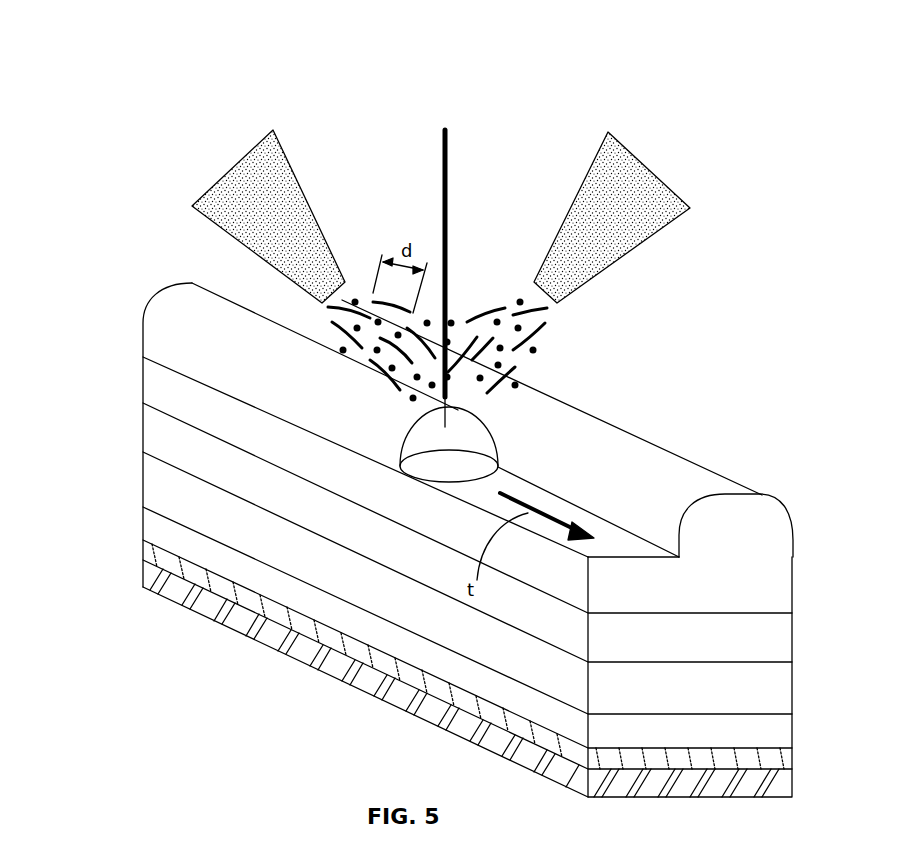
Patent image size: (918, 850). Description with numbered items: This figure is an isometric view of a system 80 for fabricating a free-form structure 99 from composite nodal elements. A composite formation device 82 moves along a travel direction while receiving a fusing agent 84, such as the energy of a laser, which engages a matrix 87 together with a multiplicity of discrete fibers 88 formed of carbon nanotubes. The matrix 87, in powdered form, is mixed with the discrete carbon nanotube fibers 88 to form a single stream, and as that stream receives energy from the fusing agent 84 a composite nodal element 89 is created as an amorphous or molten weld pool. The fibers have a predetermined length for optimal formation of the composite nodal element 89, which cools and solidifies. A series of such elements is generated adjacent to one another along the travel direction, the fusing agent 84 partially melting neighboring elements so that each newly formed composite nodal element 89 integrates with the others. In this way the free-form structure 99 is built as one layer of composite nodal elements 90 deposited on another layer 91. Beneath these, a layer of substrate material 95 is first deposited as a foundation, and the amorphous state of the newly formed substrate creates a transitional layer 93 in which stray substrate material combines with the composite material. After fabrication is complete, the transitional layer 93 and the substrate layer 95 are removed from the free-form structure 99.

The system 80 is at (711, 116).
The composite formation device 82 is at (640, 258).
The fusing agent 84 is at (459, 182).
The matrix 87 is at (535, 360).
The discrete fibers 88 is at (479, 310).
The composite nodal element 89 is at (440, 437).
The layer of composite nodal elements 90 is at (762, 423).
The layer of composite nodal elements 91 is at (467, 499).
The transitional layer 93 is at (142, 548).
The substrate material layer 95 is at (140, 575).
The free-form structure 99 is at (137, 413).